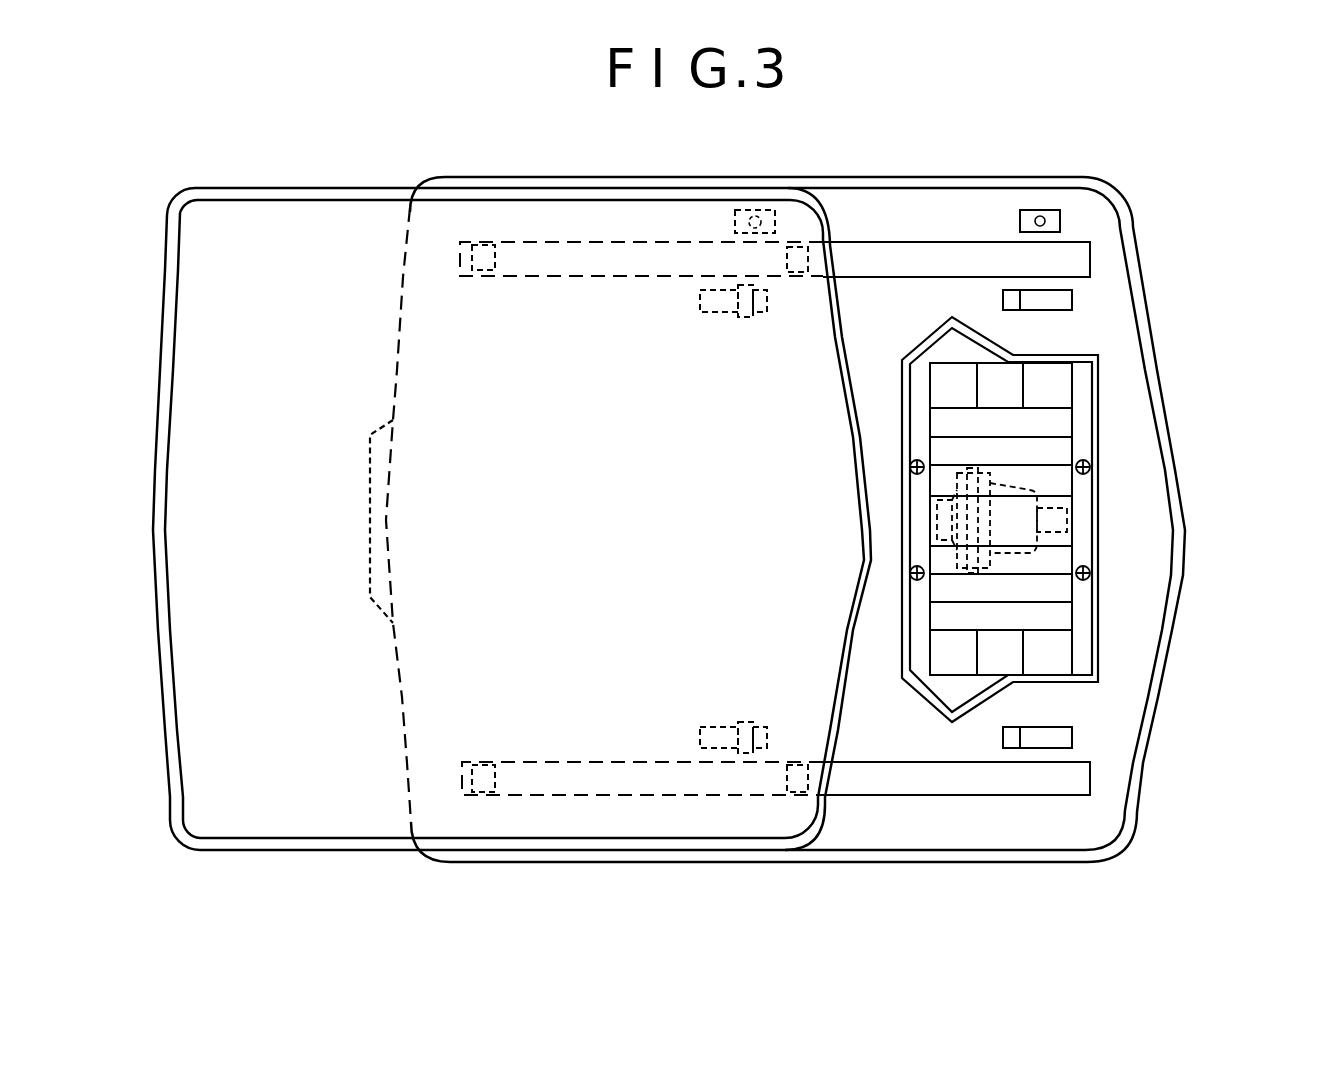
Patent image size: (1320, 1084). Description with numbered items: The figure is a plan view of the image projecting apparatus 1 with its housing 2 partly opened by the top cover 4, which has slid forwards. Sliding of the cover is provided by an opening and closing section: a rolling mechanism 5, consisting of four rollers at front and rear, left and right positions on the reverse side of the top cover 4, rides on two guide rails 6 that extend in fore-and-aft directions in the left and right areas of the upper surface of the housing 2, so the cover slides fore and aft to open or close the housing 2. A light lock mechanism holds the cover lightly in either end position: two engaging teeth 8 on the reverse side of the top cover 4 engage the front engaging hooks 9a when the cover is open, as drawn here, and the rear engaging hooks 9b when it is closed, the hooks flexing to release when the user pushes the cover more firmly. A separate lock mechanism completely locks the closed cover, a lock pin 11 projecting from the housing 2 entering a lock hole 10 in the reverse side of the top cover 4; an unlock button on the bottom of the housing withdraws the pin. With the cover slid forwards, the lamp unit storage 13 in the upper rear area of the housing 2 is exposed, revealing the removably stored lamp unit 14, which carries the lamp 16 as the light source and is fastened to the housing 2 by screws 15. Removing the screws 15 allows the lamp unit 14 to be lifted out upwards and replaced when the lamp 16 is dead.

The image projecting apparatus 1 is at (423, 163).
The housing 2 is at (1157, 298).
The top cover 4 is at (307, 213).
The rolling mechanism 5 is at (492, 258).
The guide rails 6 is at (897, 258).
The engaging teeth 8 is at (747, 320).
The front engaging hooks 9a is at (770, 302).
The rear engaging hooks 9b is at (1015, 298).
The lock hole 10 is at (755, 212).
The lock pin 11 is at (1040, 212).
The lamp unit storage 13 is at (1075, 685).
The lamp unit 14 is at (1035, 590).
The screws 15 is at (910, 466).
The lamp 16 is at (1013, 484).